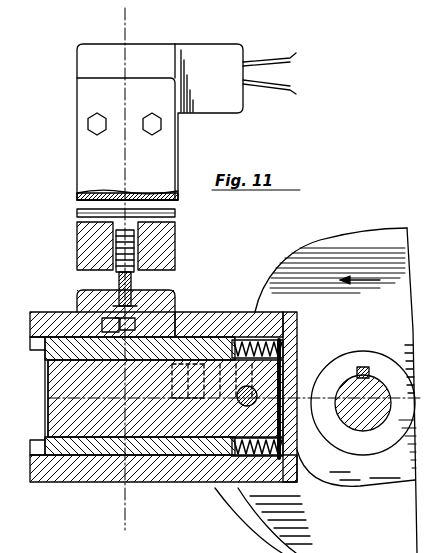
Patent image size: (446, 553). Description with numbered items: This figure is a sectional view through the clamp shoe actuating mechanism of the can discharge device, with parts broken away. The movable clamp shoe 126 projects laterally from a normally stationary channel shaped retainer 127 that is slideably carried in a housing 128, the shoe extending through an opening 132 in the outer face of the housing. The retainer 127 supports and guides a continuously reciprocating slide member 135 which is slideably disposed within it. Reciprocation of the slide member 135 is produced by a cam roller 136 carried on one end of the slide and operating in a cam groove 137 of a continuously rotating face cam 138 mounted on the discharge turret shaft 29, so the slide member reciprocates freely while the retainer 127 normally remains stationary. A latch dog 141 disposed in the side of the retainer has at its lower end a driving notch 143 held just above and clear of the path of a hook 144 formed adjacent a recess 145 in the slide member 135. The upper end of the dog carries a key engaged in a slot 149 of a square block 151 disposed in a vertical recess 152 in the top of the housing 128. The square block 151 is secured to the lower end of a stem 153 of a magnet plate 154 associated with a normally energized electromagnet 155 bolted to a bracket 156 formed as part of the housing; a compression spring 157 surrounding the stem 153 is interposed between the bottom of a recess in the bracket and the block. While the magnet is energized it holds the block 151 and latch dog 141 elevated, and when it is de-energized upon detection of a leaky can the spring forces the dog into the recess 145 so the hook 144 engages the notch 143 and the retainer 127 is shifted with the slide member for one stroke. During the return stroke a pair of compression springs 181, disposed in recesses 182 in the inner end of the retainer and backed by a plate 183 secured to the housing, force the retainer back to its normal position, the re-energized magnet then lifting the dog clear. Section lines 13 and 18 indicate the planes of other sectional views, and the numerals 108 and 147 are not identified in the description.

The section line 13 is at (22, 336).
The section line 18 is at (115, 22).
The discharge turret shaft 29 is at (370, 392).
The cam surface 108 is at (254, 520).
The clamp shoe 126 is at (172, 462).
The retainer 127 is at (34, 314).
The housing 128 is at (214, 490).
The opening 132 is at (55, 458).
The slide member 135 is at (87, 420).
The cam roller 136 is at (306, 352).
The cam groove 137 is at (268, 250).
The face cam 138 is at (328, 236).
The latch dog 141 is at (172, 326).
The driving notch 143 is at (186, 320).
The hook 144 is at (95, 340).
The recess 145 is at (125, 440).
The stop 147 is at (212, 340).
The slot 149 is at (165, 398).
The square block 151 is at (162, 290).
The vertical recess 152 is at (105, 300).
The stem 153 is at (80, 267).
The magnet plate 154 is at (172, 214).
The electromagnet 155 is at (160, 152).
The bracket 156 is at (152, 250).
The compression spring 157 is at (120, 252).
The compression springs 181 is at (290, 322).
The recesses 182 is at (264, 342).
The plate 183 is at (300, 458).